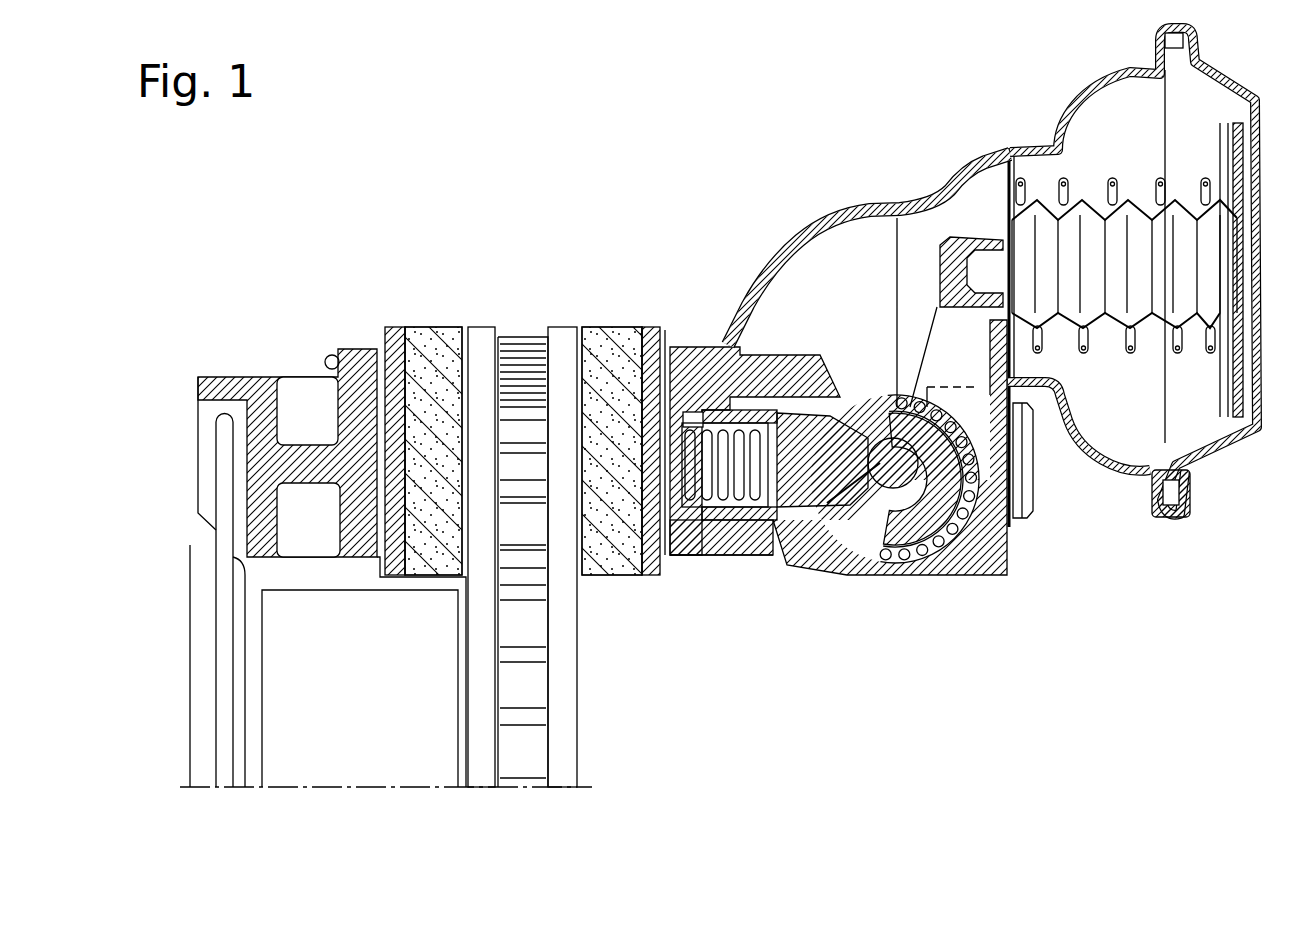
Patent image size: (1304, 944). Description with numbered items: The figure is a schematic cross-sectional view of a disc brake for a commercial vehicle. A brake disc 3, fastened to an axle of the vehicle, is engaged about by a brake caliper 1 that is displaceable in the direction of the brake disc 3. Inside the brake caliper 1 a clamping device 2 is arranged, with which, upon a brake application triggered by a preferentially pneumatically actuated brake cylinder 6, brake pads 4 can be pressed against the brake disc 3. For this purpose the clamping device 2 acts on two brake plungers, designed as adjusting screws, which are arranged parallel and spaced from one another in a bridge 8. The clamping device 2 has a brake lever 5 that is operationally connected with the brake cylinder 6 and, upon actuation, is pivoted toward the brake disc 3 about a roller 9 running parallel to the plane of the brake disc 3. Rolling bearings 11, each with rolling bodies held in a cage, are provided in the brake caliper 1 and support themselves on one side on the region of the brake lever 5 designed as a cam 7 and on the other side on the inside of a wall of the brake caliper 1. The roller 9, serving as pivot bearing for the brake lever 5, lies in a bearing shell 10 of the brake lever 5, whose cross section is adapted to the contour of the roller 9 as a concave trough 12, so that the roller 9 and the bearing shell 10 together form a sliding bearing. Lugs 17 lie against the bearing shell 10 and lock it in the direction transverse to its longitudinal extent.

The brake caliper 1 is at (823, 222).
The clamping device 2 is at (823, 302).
The brake disc 3 is at (551, 322).
The brake pads 4 is at (428, 325).
The brake lever 5 is at (940, 357).
The brake cylinder 6 is at (1117, 117).
The cam 7 is at (917, 562).
The bridge 8 is at (803, 470).
The roller 9 is at (885, 470).
The bearing shell 10 is at (945, 560).
The rolling bearings 11 is at (965, 522).
The concave trough 12 is at (845, 525).
The lugs 17 is at (1013, 478).